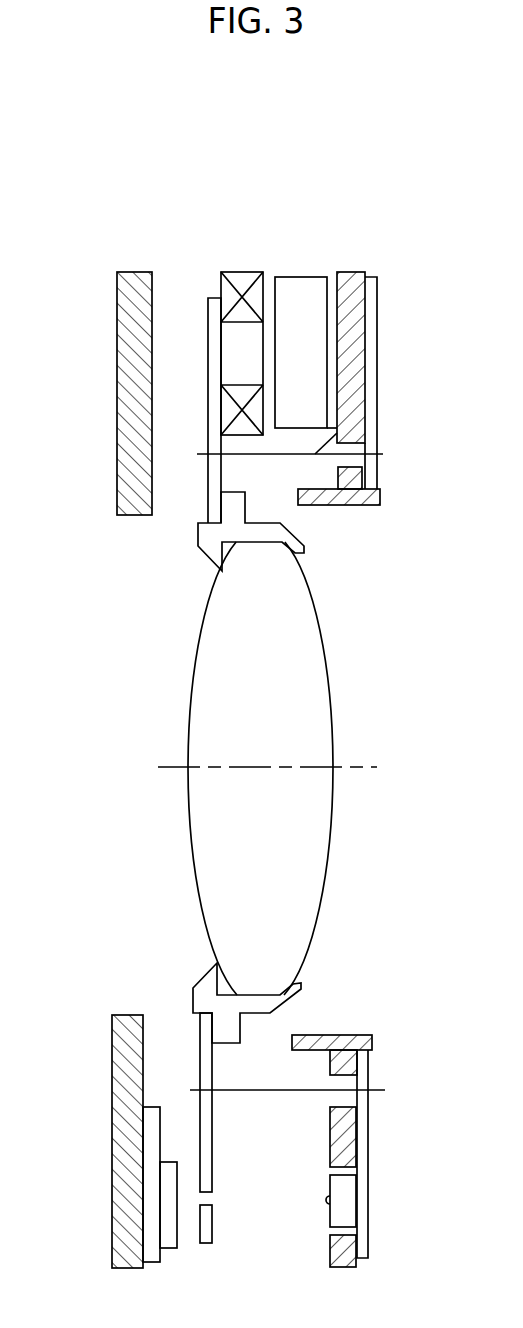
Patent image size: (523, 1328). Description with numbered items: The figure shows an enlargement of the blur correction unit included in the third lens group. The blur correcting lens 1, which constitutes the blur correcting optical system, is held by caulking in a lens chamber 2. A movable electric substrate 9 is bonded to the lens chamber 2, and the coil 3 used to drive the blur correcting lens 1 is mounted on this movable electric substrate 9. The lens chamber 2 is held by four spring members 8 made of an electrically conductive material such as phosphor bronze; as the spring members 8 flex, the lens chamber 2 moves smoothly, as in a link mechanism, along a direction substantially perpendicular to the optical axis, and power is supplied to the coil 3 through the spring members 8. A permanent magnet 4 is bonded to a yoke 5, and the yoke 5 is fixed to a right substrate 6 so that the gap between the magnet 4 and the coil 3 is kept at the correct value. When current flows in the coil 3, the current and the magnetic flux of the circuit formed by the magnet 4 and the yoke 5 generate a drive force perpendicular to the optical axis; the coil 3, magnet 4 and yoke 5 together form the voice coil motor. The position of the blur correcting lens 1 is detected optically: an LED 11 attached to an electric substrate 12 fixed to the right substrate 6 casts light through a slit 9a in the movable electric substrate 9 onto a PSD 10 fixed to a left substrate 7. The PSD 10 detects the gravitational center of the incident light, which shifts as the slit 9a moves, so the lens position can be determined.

The blur correcting lens 1 is at (233, 905).
The lens chamber 2 is at (207, 993).
The coil 3 is at (250, 281).
The magnet 4 is at (313, 283).
The yoke 5 is at (335, 285).
The right substrate 6 is at (378, 506).
The left substrate 7 is at (118, 1155).
The spring members 8 is at (367, 392).
The movable electric substrate 9 is at (213, 325).
The slit 9a is at (213, 1198).
The PSD 10 is at (167, 1238).
The LED 11 is at (345, 1198).
The electric substrate 12 is at (365, 1235).